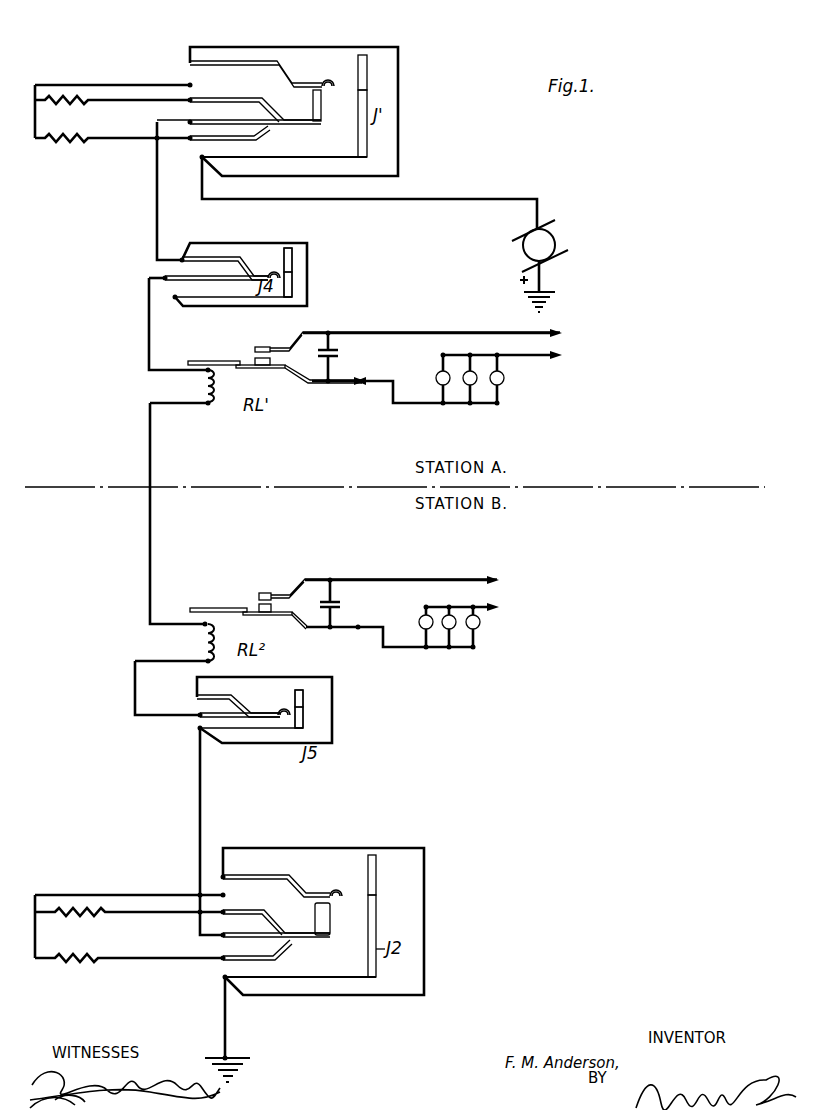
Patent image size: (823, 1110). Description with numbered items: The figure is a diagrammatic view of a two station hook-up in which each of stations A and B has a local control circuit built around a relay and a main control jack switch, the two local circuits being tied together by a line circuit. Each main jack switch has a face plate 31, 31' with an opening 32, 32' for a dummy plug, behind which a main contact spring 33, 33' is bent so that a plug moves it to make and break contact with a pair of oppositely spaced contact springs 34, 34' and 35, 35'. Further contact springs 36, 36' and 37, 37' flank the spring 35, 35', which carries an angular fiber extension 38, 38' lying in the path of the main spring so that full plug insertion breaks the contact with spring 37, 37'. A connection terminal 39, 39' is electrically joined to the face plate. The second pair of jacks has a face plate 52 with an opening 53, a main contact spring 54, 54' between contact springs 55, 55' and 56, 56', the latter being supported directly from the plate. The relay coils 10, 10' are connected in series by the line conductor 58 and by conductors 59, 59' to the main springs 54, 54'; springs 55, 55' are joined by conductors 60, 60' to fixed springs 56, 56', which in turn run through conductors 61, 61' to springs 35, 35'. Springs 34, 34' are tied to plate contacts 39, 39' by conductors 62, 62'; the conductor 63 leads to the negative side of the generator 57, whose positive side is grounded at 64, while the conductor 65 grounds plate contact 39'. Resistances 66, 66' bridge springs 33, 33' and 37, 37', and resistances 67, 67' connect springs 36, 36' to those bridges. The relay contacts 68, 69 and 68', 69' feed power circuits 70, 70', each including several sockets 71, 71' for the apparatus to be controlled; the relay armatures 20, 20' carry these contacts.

The coil 10 is at (182, 387).
The coil 10' is at (174, 644).
The relay armature 20 is at (231, 351).
The relay armature 20' is at (240, 595).
The face plate 31 is at (400, 123).
The face plate 31' is at (388, 936).
The opening 32 is at (398, 65).
The opening 32' is at (390, 875).
The main contact spring 33 is at (324, 68).
The main contact spring 33' is at (333, 875).
The contact spring 34 is at (256, 47).
The contact spring 34' is at (276, 872).
The contact spring 35 is at (308, 118).
The contact spring 35' is at (314, 932).
The contact spring 36 is at (239, 111).
The contact spring 36' is at (276, 925).
The contact spring 37 is at (234, 140).
The contact spring 37' is at (257, 947).
The angular fiber extension 38 is at (255, 105).
The angular fiber extension 38' is at (276, 914).
The connection terminal 39 is at (284, 165).
The connection terminal 39' is at (300, 998).
The face plate 52 is at (292, 287).
The opening 53 is at (292, 267).
The main contact spring 54 is at (266, 260).
The main contact spring 54' is at (271, 698).
The contact spring 55 is at (225, 240).
The contact spring 55' is at (221, 703).
The fixed contact spring 56 is at (220, 287).
The fixed contact spring 56' is at (251, 741).
The generator 57 is at (560, 241).
The line conductor 58 is at (157, 518).
The conductor 59 is at (159, 324).
The conductor 59' is at (148, 689).
The conductor 60 is at (241, 260).
The conductor 60' is at (264, 695).
The conductor 61 is at (150, 200).
The conductor 61' is at (186, 831).
The conductor 62 is at (319, 111).
The conductor 62' is at (342, 921).
The conductor 63 is at (434, 200).
The ground 64 is at (545, 285).
The conductor 65 is at (225, 1020).
The resistance 66 is at (112, 156).
The resistance 66' is at (129, 974).
The resistance 67 is at (112, 76).
The resistance 67' is at (129, 923).
The contact 68 is at (310, 381).
The contact 68' is at (364, 625).
The contact 69 is at (408, 335).
The contact 69' is at (379, 575).
The power circuit 70 is at (459, 378).
The power circuit 70' is at (442, 621).
The sockets 71 is at (516, 371).
The sockets 71' is at (500, 618).